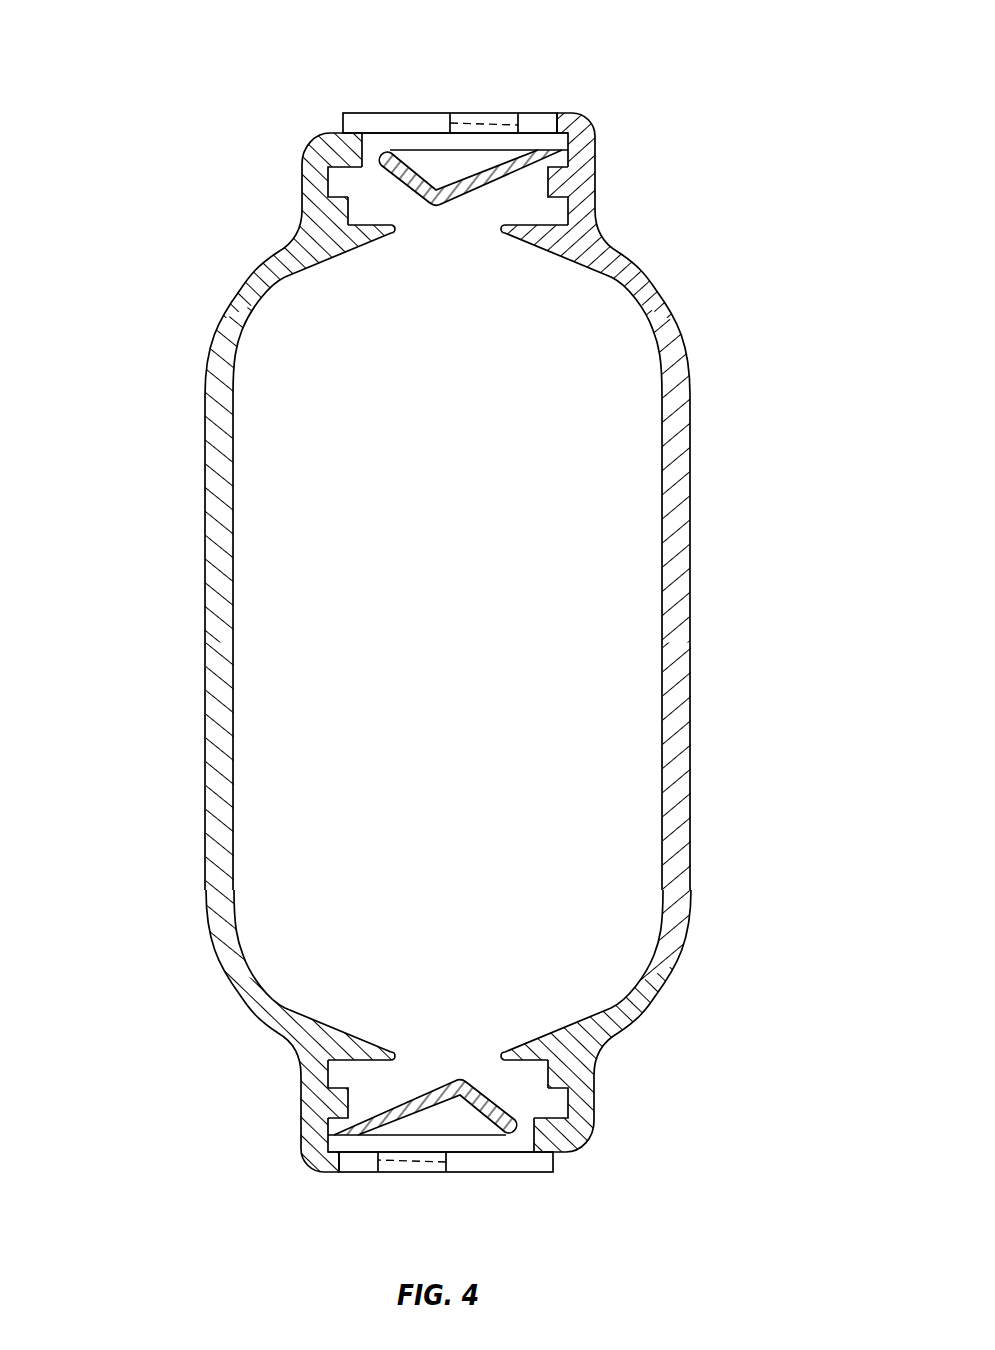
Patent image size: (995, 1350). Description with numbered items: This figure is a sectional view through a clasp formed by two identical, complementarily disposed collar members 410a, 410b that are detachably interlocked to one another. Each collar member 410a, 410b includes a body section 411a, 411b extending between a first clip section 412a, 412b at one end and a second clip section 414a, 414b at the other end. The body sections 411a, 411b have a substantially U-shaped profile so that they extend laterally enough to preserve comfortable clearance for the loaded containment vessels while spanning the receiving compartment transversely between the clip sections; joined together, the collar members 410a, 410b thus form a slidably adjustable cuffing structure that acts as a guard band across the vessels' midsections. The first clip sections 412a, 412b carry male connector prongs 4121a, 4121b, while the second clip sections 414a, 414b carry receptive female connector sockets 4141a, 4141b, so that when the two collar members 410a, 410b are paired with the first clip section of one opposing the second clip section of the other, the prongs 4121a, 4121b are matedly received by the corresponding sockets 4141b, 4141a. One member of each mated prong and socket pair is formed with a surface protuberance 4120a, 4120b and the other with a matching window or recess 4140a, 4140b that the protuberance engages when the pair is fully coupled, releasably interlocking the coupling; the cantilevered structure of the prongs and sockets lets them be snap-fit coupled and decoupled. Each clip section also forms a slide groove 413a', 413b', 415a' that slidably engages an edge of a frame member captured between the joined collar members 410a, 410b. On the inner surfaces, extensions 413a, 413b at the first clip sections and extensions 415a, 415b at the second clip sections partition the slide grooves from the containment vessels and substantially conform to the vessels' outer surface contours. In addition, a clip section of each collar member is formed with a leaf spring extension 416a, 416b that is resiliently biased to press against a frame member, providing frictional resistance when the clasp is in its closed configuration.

The collar member 410a is at (192, 544).
The collar member 410b is at (703, 544).
The body section 411a is at (222, 650).
The body section 411b is at (673, 650).
The first clip section 412a is at (310, 189).
The first clip section 412b is at (585, 1095).
The male connector prong 4121a is at (318, 148).
The male connector prong 4121b is at (577, 1137).
The extension 413a is at (340, 284).
The extension 413b is at (556, 1000).
The slide groove 413a' is at (418, 234).
The slide groove 413b' is at (555, 615).
The second clip section 414a is at (307, 1055).
The second clip section 414b is at (585, 227).
The extension 415a is at (298, 982).
The extension 415b is at (546, 246).
The slide groove 415a' is at (268, 1124).
The leaf spring extension 416a is at (346, 1069).
The leaf spring extension 416b is at (552, 214).
The window or recess 4140a is at (378, 1173).
The window or recess 4140b is at (502, 112).
The surface protuberance 4120a is at (455, 112).
The surface protuberance 4120b is at (440, 1173).
The female connector socket 4141a is at (321, 1170).
The female connector socket 4141b is at (580, 114).